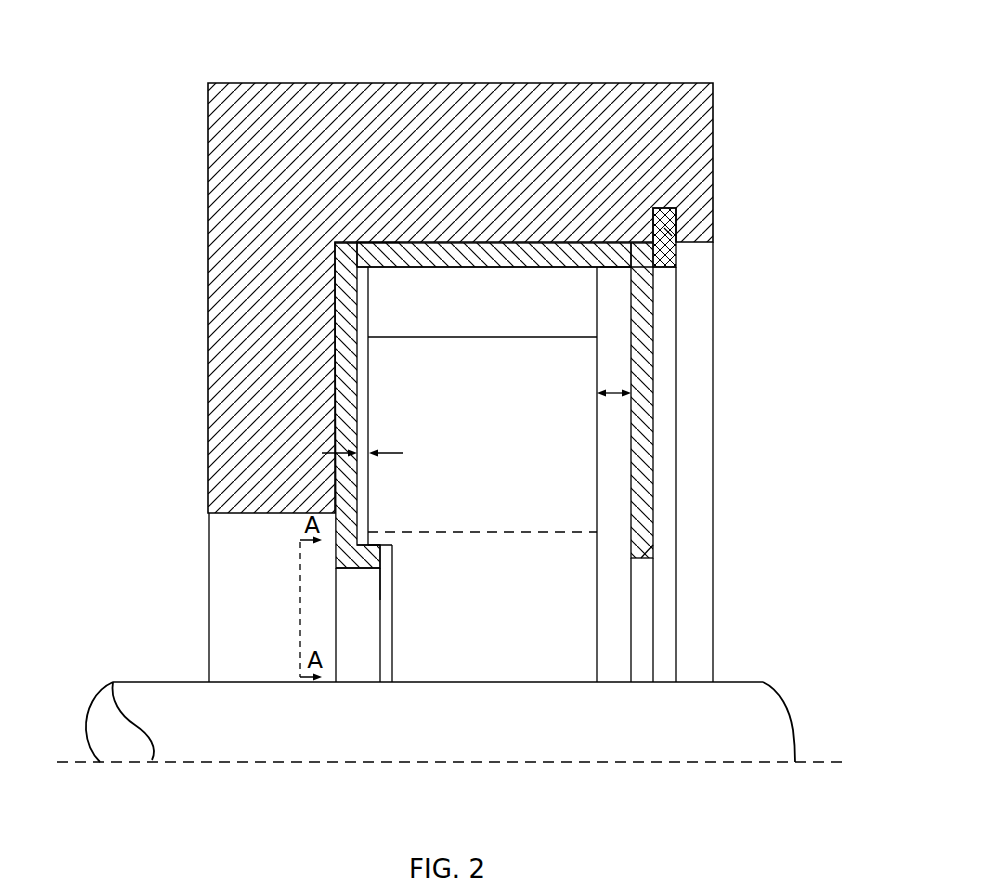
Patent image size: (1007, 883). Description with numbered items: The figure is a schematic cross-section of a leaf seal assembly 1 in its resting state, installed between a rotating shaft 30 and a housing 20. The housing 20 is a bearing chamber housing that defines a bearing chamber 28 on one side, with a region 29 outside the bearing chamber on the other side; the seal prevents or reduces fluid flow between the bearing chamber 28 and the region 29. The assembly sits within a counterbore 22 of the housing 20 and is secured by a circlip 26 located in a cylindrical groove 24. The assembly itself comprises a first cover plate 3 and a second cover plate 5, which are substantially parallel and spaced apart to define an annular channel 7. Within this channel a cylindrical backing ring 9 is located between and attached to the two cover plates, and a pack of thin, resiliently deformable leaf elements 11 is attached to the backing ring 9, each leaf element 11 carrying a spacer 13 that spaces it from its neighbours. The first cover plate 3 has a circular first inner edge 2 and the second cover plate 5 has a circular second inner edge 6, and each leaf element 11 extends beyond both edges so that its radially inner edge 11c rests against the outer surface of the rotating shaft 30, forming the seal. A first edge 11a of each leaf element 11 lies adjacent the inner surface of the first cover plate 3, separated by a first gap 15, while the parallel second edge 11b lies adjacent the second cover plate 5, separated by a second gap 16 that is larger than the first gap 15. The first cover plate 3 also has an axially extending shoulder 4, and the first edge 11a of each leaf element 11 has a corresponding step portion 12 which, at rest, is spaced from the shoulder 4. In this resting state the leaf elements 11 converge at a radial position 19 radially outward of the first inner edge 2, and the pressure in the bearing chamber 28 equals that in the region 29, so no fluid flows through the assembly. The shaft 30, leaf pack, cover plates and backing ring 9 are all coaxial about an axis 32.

The leaf seal assembly 1 is at (780, 342).
The first inner edge 2 is at (372, 570).
The first cover plate 3 is at (343, 377).
The shoulder 4 is at (355, 572).
The second cover plate 5 is at (653, 430).
The second inner edge 6 is at (653, 545).
The annular channel 7 is at (613, 268).
The cylindrical backing ring 9 is at (557, 250).
The leaf element 11 is at (562, 592).
The first edge 11a is at (368, 432).
The second edge 11b is at (597, 502).
The radially inner edge 11c is at (466, 685).
The step portion 12 is at (363, 555).
The spacer 13 is at (403, 322).
The first gap 15 is at (362, 458).
The second gap 16 is at (616, 380).
The radial position 19 is at (552, 533).
The housing 20 is at (474, 88).
The counterbore 22 is at (378, 242).
The cylindrical groove 24 is at (668, 208).
The circlip 26 is at (667, 233).
The bearing chamber 28 is at (806, 479).
The region outside the bearing chamber 29 is at (78, 479).
The rotating shaft 30 is at (565, 737).
The axis 32 is at (678, 760).